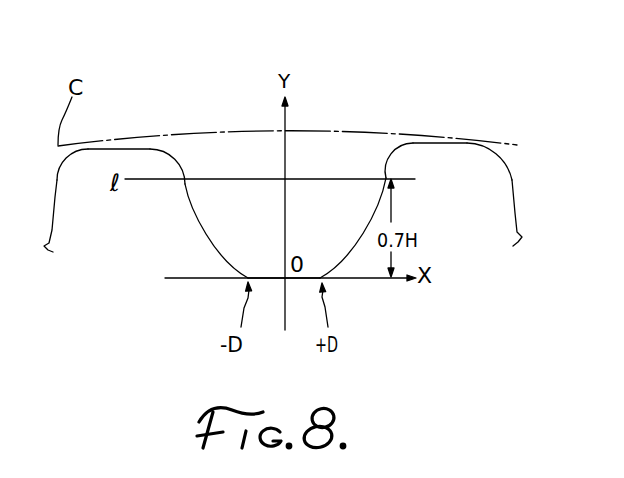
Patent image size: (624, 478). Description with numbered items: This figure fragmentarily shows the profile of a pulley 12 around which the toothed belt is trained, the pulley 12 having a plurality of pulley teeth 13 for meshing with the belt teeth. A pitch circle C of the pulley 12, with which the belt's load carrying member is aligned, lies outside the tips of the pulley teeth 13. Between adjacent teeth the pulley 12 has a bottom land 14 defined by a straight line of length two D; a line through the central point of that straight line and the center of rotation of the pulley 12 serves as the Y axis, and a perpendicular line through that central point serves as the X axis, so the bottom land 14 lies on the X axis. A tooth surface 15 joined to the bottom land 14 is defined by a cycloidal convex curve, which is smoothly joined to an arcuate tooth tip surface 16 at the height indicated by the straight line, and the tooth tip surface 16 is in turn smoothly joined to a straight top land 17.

The pulley 12 is at (433, 82).
The pulley teeth 13 is at (467, 158).
The bottom land 14 is at (268, 268).
The tooth surface 15 is at (346, 248).
The tooth tip surface 16 is at (176, 149).
The top land 17 is at (127, 136).